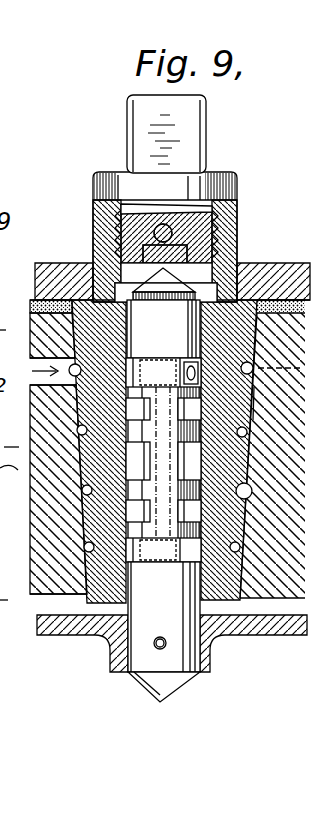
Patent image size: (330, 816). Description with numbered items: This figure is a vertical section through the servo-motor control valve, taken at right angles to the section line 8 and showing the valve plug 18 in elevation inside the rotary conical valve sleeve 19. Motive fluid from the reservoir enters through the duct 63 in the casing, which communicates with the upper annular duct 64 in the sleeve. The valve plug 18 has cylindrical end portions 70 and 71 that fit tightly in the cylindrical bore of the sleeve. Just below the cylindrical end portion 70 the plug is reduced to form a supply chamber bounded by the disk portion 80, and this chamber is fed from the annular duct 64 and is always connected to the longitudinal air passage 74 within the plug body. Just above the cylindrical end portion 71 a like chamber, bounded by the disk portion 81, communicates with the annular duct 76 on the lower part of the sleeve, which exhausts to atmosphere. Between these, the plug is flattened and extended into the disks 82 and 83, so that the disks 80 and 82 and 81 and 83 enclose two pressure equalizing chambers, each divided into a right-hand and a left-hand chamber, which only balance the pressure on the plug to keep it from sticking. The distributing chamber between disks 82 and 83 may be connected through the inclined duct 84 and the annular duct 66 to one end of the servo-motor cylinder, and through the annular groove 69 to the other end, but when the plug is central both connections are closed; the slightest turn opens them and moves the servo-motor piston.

The section line 8— 8 is at (161, 74).
The valve plug 18 is at (180, 633).
The conical valve sleeve 19 is at (255, 405).
The duct 63 is at (33, 355).
The upper annular duct 64 is at (256, 400).
The annular duct 66 is at (246, 433).
The annular groove 69 is at (247, 483).
The cylindrical end portion 70 is at (163, 313).
The cylindrical end portion 71 is at (137, 595).
The longitudinal air passage 74 is at (27, 448).
The annular duct 76 is at (87, 553).
The disk portion 80 is at (200, 396).
The disk portion 81 is at (123, 528).
The disk 82 is at (127, 427).
The disk 83 is at (130, 493).
The inclined duct 84 is at (24, 473).